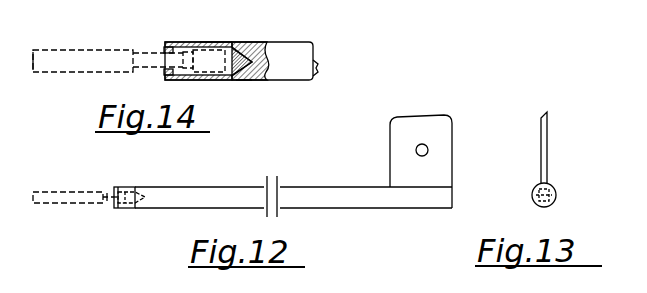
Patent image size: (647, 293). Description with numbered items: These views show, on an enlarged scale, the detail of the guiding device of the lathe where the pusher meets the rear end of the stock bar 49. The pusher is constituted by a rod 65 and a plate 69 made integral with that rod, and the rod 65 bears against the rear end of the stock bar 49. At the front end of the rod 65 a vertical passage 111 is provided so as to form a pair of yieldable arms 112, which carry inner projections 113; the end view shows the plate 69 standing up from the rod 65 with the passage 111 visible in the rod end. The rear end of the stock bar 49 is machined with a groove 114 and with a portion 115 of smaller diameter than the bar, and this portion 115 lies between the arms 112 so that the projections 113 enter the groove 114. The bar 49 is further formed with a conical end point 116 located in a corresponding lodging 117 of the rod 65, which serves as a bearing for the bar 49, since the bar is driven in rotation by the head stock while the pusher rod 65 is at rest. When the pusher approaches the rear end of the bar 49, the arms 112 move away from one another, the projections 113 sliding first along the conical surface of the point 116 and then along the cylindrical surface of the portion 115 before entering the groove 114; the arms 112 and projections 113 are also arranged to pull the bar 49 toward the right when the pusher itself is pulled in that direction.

In FIG. 14, the stock bar 49 is at (63, 50).
In FIG. 12, the stock bar 49 is at (75, 205).
In FIG. 14, the pusher rod 65 is at (283, 52).
In FIG. 12, the pusher rod 65 is at (343, 199).
In FIG. 13, the pusher rod 65 is at (553, 188).
In FIG. 12, the plate 69 is at (438, 130).
In FIG. 13, the plate 69 is at (542, 118).
In FIG. 12, the vertical passage 111 is at (126, 212).
In FIG. 13, the vertical passage 111 is at (556, 203).
In FIG. 14, the yieldable arms 112 is at (192, 51).
In FIG. 14, the inner projections 113 is at (164, 72).
In FIG. 14, the groove 114 is at (140, 52).
In FIG. 12, the groove 114 is at (118, 190).
In FIG. 14, the reduced-diameter portion 115 is at (216, 42).
In FIG. 14, the conical end point 116 is at (243, 81).
In FIG. 14, the lodging 117 is at (251, 67).